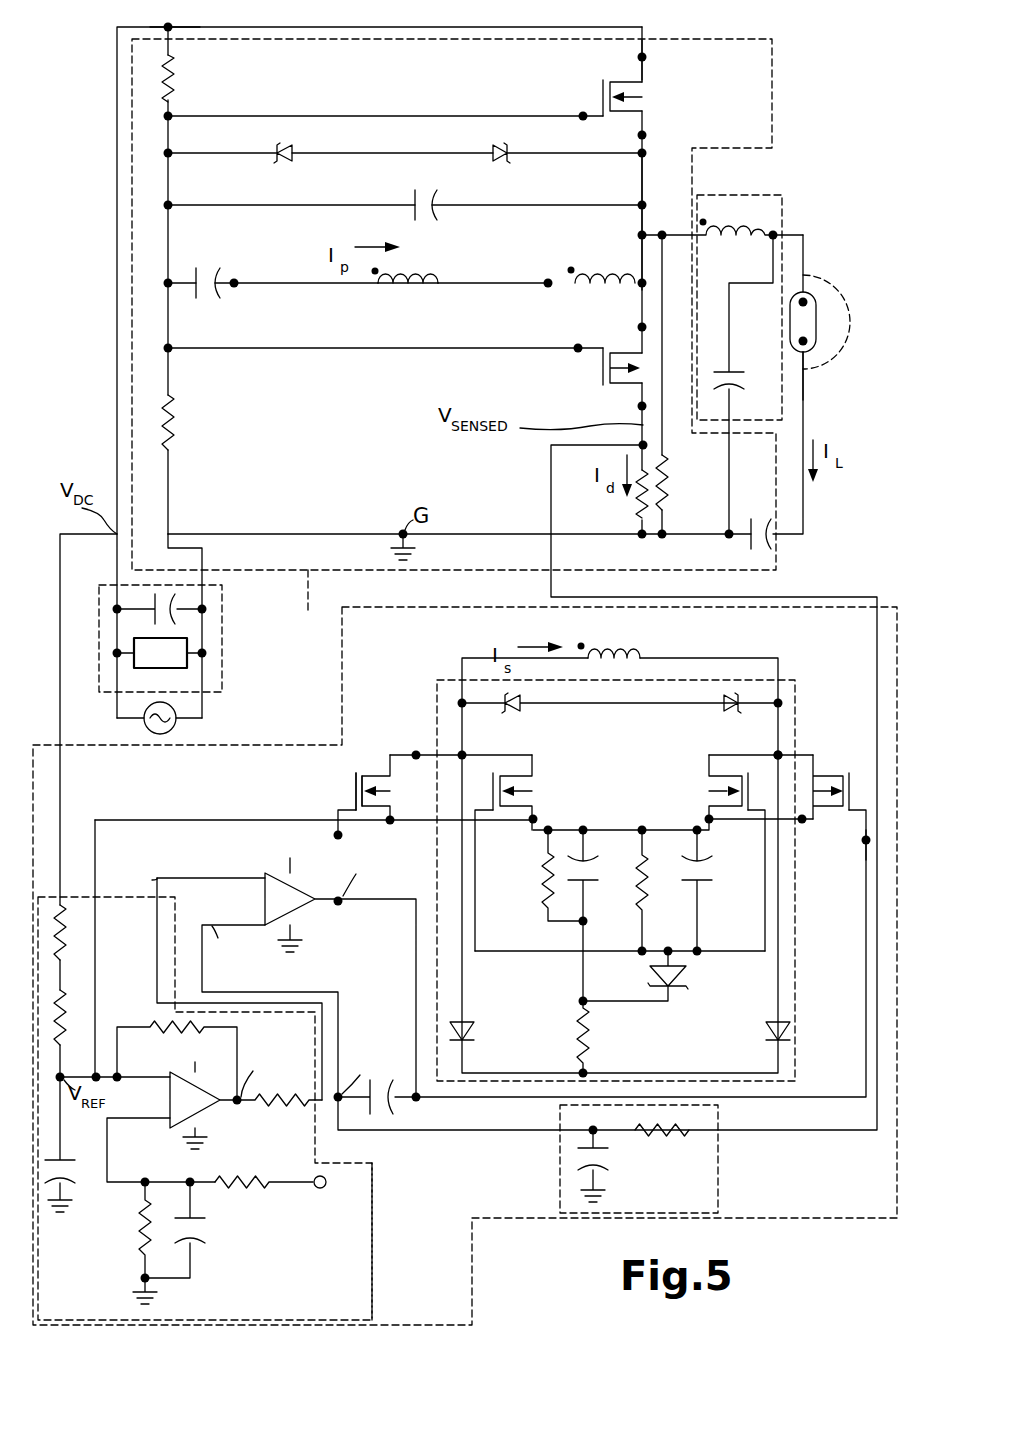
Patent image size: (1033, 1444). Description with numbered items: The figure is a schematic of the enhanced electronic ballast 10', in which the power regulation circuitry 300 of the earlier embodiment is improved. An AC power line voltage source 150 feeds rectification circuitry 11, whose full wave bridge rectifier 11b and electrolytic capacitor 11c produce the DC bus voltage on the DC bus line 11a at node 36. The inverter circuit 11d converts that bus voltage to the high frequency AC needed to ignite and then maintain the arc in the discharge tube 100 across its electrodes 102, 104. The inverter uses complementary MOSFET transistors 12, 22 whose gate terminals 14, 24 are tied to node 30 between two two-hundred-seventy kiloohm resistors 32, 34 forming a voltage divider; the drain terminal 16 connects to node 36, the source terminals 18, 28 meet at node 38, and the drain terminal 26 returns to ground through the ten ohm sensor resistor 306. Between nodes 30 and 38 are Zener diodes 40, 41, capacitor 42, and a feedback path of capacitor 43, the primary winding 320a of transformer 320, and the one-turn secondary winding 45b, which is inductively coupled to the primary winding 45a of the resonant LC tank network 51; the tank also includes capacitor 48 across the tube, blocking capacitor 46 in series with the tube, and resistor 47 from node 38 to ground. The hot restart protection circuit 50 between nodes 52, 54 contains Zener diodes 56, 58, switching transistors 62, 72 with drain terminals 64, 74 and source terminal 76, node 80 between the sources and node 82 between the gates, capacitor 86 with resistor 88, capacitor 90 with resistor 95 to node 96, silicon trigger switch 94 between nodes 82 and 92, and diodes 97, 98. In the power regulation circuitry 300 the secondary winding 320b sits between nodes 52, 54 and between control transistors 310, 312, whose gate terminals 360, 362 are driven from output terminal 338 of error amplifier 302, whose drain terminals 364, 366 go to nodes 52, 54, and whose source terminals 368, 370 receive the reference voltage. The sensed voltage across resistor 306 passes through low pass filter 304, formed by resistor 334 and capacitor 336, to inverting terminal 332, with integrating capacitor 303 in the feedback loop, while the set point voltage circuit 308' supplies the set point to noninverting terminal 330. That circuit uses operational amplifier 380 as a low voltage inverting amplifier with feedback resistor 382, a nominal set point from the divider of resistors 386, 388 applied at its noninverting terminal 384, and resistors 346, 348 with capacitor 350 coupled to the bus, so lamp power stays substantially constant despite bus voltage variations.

The electronic ballast 10' is at (848, 102).
The rectification circuitry 11 is at (222, 587).
The DC bus line 11a is at (350, 27).
The full wave bridge rectifier 11b is at (190, 650).
The electrolytic capacitor 11c is at (183, 607).
The inverter circuit 11d is at (316, 607).
The n channel enhancement type MOSFET transistor 12 is at (607, 91).
The gate terminal 14 is at (602, 113).
The drain terminal 16 is at (645, 75).
The source terminal 18 is at (645, 132).
The p channel enhancement type MOSFET transistor 22 is at (592, 380).
The gate terminal 24 is at (575, 355).
The drain terminal 26 is at (640, 392).
The source terminal 28 is at (640, 327).
The node 30 is at (170, 120).
The 270 kiloohm resistor 32 is at (172, 64).
The 270 kiloohm resistor 34 is at (172, 405).
The node 36 is at (168, 27).
The node 38 is at (646, 153).
The 7.5 V Zener diode 40 is at (293, 149).
The 7.5 V Zener diode 41 is at (492, 152).
The 470 pF capacitor 42 is at (412, 203).
The 33 nF capacitor 43 is at (212, 280).
The 21 microhenry primary winding 45a is at (741, 238).
The 40 nanohenry tap or secondary winding 45b is at (628, 275).
The blocking capacitor 46 is at (742, 520).
The 270 kiloohm resistor 47 is at (672, 468).
The 200 pF capacitor 48 is at (735, 386).
The hot restart protection circuit 50 is at (797, 1077).
The resonant LC tank network 51 is at (764, 195).
The node 52 is at (236, 281).
The node 54 is at (546, 281).
The 20 V Zener diode 56 is at (521, 707).
The 20 V Zener diode 58 is at (720, 707).
The n channel enhancement type MOSFET switching transistor 62 is at (540, 784).
The drain terminal 64 is at (508, 750).
The n channel enhancement type MOSFET switching transistor 72 is at (704, 784).
The drain terminal 74 is at (722, 750).
The source terminal 76 is at (713, 823).
The node 80 is at (550, 829).
The node 82 is at (640, 950).
The 0.1 microfarad capacitor 86 is at (702, 864).
The 10 megohm resistor 88 is at (653, 873).
The 1.0 microfarad capacitor 90 is at (590, 862).
The node 92 is at (580, 1000).
The silicon trigger switch 94 is at (552, 898).
The 100 ohm resistor 95 is at (578, 1028).
The node 96 is at (588, 1072).
The diode 97 is at (476, 1028).
The diode 98 is at (776, 1020).
The discharge tube 100 is at (790, 326).
The electrode 102 is at (817, 292).
The electrode 104 is at (817, 355).
The AC power line voltage source 150 is at (178, 726).
The power regulation circuitry 300 is at (897, 605).
The operational amplifier 302 is at (250, 871).
The 470 pF integrating capacitor 303 is at (394, 1102).
The low pass filter 304 is at (560, 1147).
The 10 ohm sensor resistor 306 is at (636, 498).
The set point voltage circuit 308' is at (416, 1241).
The p channel MOSFET control transistor 310 is at (368, 755).
The p channel MOSFET control transistor 312 is at (840, 816).
The transformer 320 is at (414, 303).
The primary winding 320a is at (430, 281).
The secondary winding 320b is at (645, 658).
The noninverting terminal 330 is at (262, 882).
The inverting terminal 332 is at (226, 926).
The 10 kiloohm resistor 334 is at (668, 1140).
The 1 microfarad capacitor 336 is at (576, 1168).
The output terminal 338 is at (340, 908).
The resistor 346 is at (70, 940).
The resistor 348 is at (70, 1012).
The 0.1 microfarad capacitor 350 is at (58, 1176).
The gate terminal 360 is at (345, 802).
The gate terminal 362 is at (862, 800).
The drain terminal 364 is at (416, 753).
The drain terminal 366 is at (813, 752).
The source terminal 368 is at (392, 824).
The source terminal 370 is at (805, 824).
The operational amplifier 380 is at (230, 1135).
The 10 kiloohm feedback resistor 382 is at (205, 1022).
The noninverting terminal 384 is at (226, 1102).
The resistor 386 is at (250, 1195).
The resistor 388 is at (142, 1247).